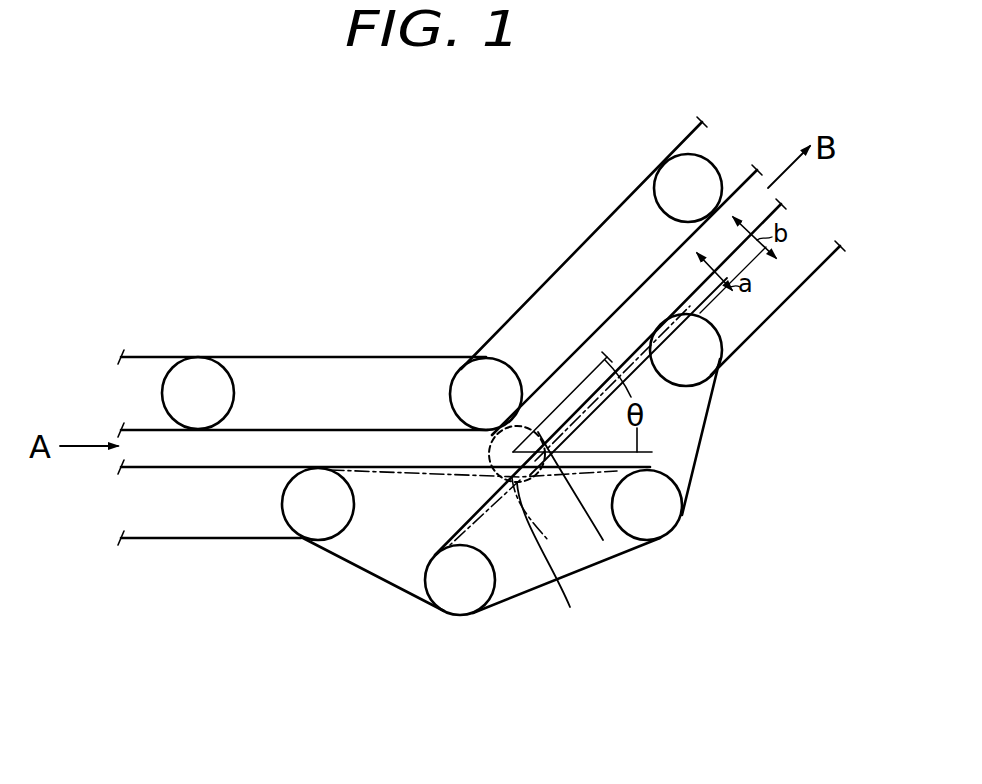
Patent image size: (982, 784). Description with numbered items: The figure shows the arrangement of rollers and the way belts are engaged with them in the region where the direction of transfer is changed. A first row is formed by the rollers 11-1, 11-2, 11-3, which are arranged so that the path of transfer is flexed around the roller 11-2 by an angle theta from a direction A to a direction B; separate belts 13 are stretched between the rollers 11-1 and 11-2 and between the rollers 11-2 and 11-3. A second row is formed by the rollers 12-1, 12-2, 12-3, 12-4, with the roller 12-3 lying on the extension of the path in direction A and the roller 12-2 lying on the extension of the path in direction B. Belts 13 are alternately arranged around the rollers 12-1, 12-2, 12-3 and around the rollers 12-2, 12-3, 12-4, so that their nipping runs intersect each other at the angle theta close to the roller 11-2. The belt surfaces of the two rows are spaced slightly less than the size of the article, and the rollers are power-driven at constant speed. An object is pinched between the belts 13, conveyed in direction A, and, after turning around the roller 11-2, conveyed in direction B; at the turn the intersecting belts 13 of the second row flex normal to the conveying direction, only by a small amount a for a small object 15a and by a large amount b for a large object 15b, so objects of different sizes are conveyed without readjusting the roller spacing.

The roller of first row 11-1 is at (198, 376).
The roller of first row 11-2 is at (477, 382).
The roller of first row 11-3 is at (673, 178).
The roller of second row 12-1 is at (312, 523).
The roller of second row 12-2 is at (460, 600).
The roller of second row 12-3 is at (666, 507).
The roller of second row 12-4 is at (702, 357).
The belt 13 is at (298, 356).
The small-size object 15a is at (562, 563).
The large-size object 15b is at (603, 540).